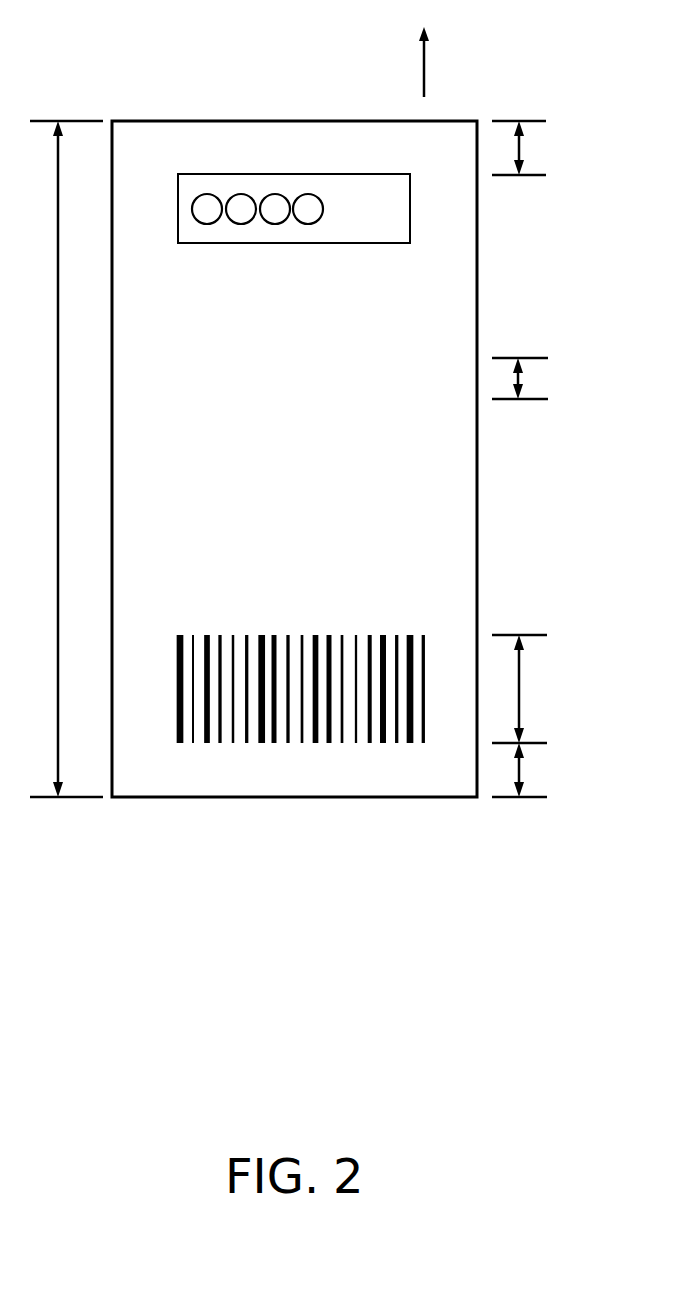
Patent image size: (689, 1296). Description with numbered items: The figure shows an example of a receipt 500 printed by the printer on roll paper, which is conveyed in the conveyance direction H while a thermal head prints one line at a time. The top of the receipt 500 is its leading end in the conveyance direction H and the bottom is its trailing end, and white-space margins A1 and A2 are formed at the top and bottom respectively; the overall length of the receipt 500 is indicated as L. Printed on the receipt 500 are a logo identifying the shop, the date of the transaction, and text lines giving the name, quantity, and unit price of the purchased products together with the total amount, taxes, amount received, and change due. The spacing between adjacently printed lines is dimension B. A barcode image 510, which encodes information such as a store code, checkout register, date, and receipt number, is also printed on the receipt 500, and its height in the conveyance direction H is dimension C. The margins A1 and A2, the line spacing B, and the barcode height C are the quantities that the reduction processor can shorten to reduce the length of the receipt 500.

The receipt 500 is at (152, 121).
The barcode image 510 is at (264, 760).
The conveyance direction H is at (434, 62).
The receipt length L is at (66, 459).
The top margin A1 is at (527, 148).
The line spacing B is at (521, 378).
The height of the barcode image C is at (519, 689).
The bottom margin A2 is at (526, 770).